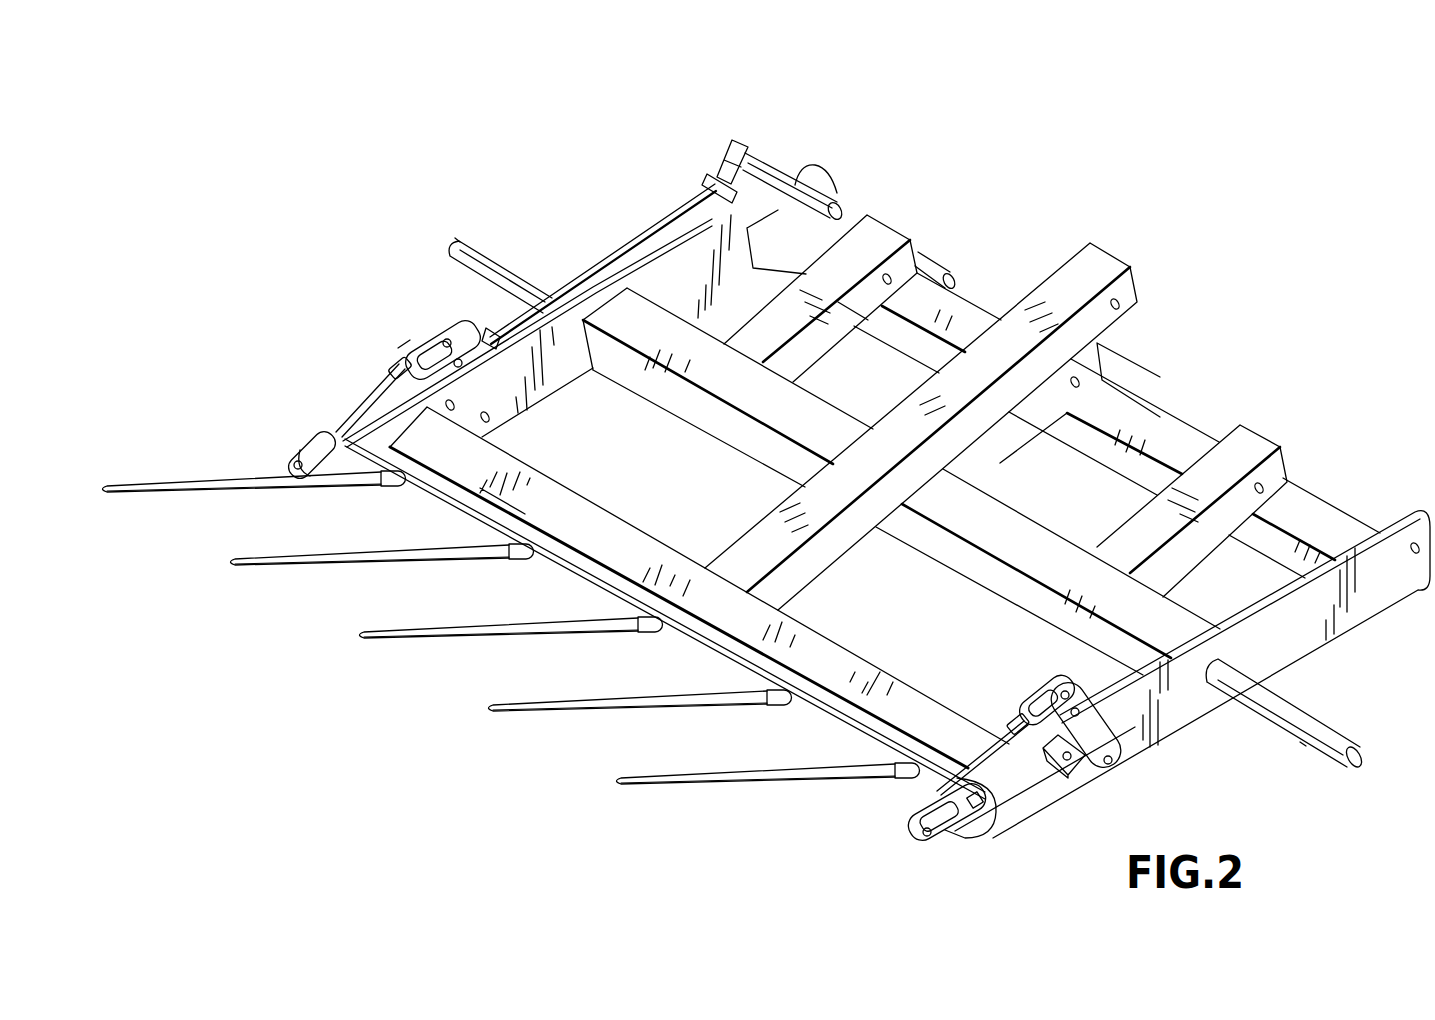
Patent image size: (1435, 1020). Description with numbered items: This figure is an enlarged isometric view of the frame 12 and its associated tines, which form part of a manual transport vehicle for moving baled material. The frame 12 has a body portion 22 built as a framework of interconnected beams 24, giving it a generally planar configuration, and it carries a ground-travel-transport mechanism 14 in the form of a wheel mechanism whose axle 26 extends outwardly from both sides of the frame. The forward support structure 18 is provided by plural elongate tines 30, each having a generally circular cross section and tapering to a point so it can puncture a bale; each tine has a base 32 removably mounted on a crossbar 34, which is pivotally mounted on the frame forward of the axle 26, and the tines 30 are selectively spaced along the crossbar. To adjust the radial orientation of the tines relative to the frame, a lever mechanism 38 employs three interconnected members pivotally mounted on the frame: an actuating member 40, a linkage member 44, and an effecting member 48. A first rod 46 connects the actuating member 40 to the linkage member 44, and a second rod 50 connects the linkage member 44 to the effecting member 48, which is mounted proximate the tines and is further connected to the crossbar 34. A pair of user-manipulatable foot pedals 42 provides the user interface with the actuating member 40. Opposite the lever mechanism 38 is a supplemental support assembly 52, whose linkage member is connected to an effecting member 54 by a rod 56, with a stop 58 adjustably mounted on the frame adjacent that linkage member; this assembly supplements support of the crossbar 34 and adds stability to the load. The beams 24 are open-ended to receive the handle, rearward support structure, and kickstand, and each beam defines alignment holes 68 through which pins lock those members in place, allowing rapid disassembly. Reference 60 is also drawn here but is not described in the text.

The frame 12 is at (1158, 412).
The ground-travel-transport mechanism 14 is at (450, 232).
The forward support structure 18 is at (550, 646).
The body portion 22 is at (851, 548).
The beams 24 is at (834, 348).
The axle 26 is at (505, 245).
The tines 30 is at (180, 503).
The base 32 is at (396, 494).
The crossbar 34 is at (795, 714).
The lever mechanism 38 is at (395, 342).
The actuating member 40 is at (768, 146).
The foot pedals 42 is at (840, 192).
The linkage member 44 is at (435, 330).
The first rod 46 is at (662, 228).
The effecting member 48 is at (289, 440).
The second rod 50 is at (368, 395).
The supplemental support assembly 52 is at (1047, 666).
The effecting member 54 is at (1123, 757).
The rod 56 is at (950, 838).
The stop 58 is at (990, 748).
The bracket 60 is at (1058, 784).
The alignment holes 68 is at (889, 273).